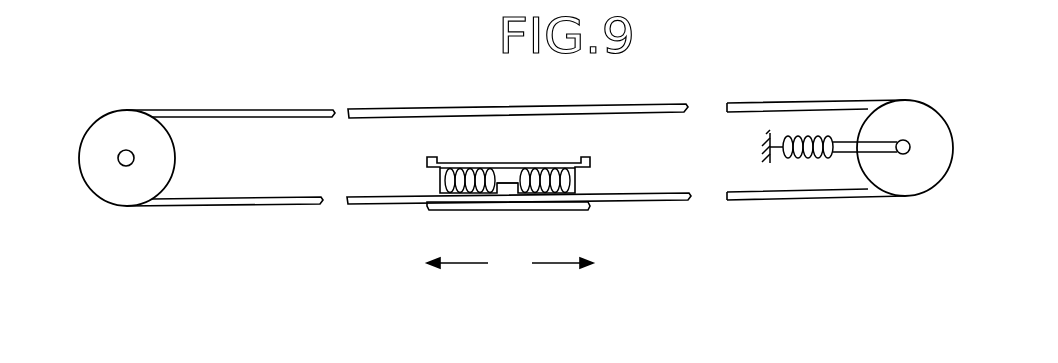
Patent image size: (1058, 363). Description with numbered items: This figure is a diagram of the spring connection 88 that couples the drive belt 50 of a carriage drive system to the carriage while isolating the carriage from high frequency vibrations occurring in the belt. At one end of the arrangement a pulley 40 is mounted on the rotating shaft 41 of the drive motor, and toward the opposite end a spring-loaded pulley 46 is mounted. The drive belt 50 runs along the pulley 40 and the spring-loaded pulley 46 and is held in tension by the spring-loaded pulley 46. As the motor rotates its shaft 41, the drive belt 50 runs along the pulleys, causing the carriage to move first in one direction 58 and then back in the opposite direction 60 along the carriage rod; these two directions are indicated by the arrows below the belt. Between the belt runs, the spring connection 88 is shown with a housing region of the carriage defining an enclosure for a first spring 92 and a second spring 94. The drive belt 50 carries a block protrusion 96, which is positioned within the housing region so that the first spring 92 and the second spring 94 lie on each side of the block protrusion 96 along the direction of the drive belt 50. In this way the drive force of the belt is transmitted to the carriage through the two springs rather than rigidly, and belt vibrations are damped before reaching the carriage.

The pulley 40 is at (130, 117).
The rotating shaft 41 is at (125, 166).
The spring-loaded pulley 46 is at (912, 113).
The drive belt 50 is at (683, 201).
The one direction 58 is at (557, 265).
The opposite direction 60 is at (477, 265).
The spring connection 88 is at (406, 222).
The first spring 92 is at (470, 172).
The second spring 94 is at (563, 170).
The block protrusion 96 is at (507, 182).